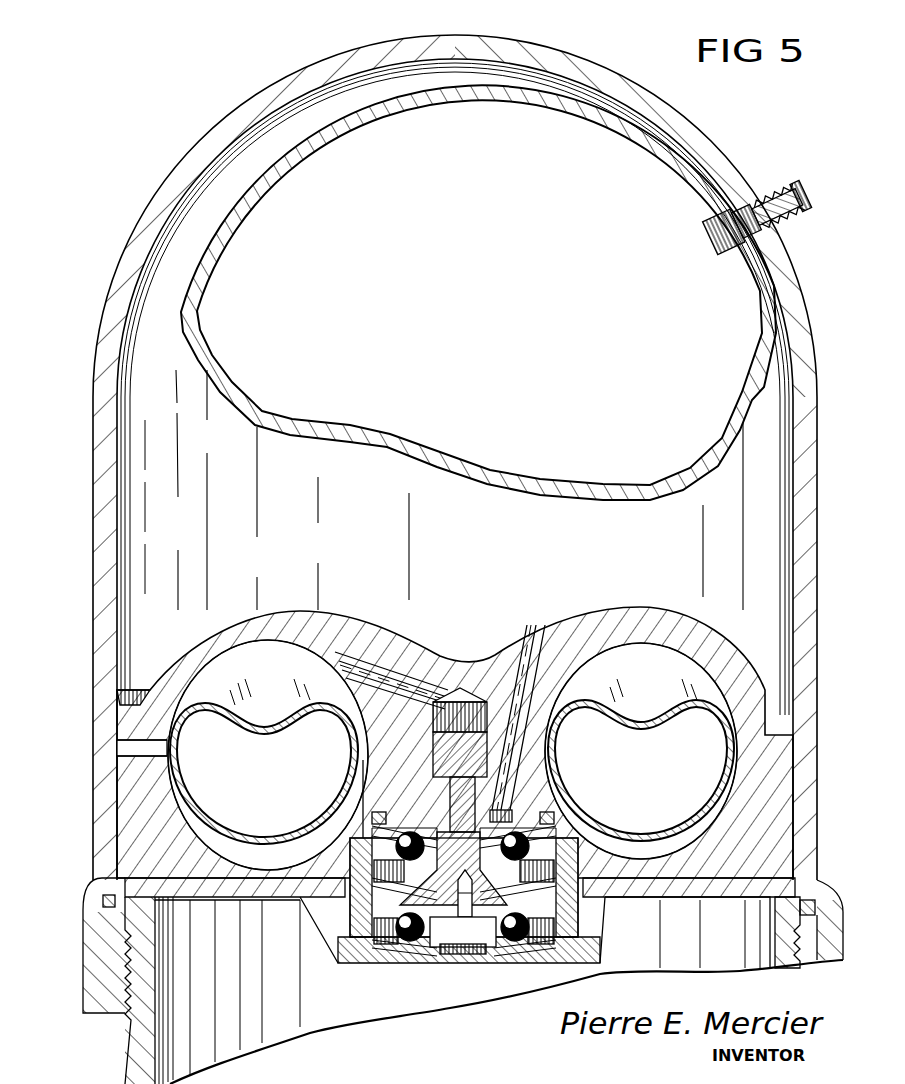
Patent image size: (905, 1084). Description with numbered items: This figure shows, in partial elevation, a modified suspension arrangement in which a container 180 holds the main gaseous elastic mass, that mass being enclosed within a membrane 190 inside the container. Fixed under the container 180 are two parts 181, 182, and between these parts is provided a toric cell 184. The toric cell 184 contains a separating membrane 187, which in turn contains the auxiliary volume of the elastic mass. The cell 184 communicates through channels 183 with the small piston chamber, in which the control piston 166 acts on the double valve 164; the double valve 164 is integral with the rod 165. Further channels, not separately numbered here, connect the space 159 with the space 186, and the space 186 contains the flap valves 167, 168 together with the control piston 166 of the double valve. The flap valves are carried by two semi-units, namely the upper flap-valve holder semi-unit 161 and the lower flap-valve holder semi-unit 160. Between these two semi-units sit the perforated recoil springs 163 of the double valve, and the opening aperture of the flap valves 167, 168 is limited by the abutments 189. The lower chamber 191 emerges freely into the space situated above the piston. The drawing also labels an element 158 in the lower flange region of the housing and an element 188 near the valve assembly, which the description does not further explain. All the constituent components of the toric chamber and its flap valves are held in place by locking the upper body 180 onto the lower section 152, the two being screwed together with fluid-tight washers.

The membrane 190 is at (240, 211).
The container 180 is at (104, 385).
The space 159 is at (137, 497).
The part 182 is at (227, 633).
The channels 183 is at (392, 672).
The toric cell 184 is at (222, 678).
The part 181 is at (133, 757).
The separating membrane 187 is at (185, 792).
The flange 158 is at (156, 890).
The control piston 166 is at (445, 760).
The rod 165 is at (455, 797).
The space 186 is at (497, 815).
The flap valve 168 is at (545, 843).
The upper flap-valve holder semi-unit 161 is at (550, 865).
The perforated recoil springs 163 is at (375, 885).
The double valve 164 is at (385, 915).
The lower flap-valve holder semi-unit 160 is at (550, 912).
The spring 188 is at (385, 948).
The abutments 189 is at (405, 960).
The lower chamber 191 is at (470, 935).
The flap valve 167 is at (520, 940).
The lower section 152 is at (138, 1052).